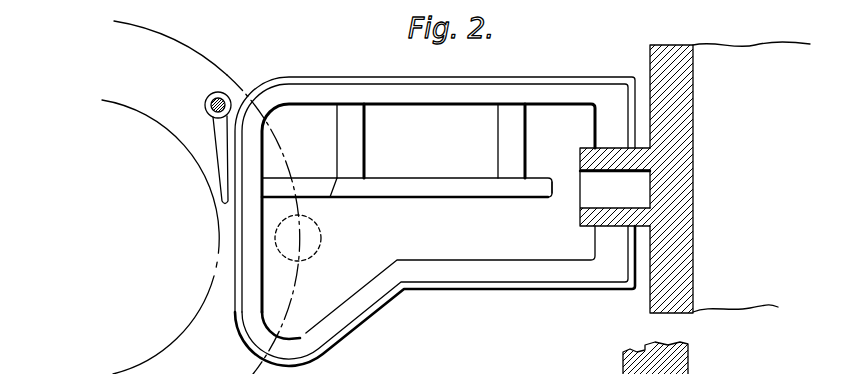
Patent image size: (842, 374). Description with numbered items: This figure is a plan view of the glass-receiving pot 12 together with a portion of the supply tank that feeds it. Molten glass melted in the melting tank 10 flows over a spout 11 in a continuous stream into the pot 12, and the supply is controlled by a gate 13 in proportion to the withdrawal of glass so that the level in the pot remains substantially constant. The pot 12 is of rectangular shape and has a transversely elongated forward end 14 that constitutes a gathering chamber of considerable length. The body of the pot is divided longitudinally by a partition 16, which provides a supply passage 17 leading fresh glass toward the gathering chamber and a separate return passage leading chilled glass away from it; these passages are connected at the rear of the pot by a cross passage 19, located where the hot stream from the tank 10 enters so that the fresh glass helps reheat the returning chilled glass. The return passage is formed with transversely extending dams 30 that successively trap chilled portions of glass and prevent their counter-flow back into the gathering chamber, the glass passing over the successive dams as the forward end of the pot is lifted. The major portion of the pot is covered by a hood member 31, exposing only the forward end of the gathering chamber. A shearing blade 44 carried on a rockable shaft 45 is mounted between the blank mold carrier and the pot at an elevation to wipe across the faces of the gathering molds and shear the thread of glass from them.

The melting tank 10 is at (694, 178).
The spout 11 is at (581, 104).
The pot 12 is at (476, 273).
The gate 13 is at (622, 372).
The forward end 14 is at (316, 329).
The partition 16 is at (447, 188).
The supply passage 17 is at (330, 238).
The cross passage 19 is at (555, 196).
The dams 30 is at (348, 160).
The hood member 31 is at (484, 365).
The shearing blade 44 is at (218, 140).
The rockable shaft 45 is at (222, 99).